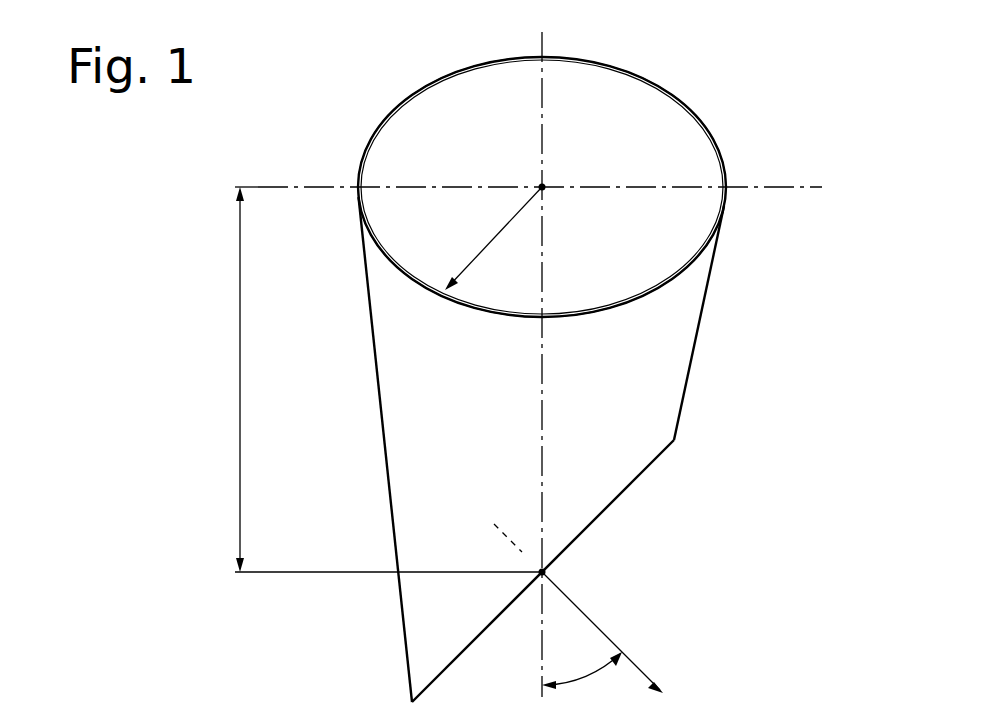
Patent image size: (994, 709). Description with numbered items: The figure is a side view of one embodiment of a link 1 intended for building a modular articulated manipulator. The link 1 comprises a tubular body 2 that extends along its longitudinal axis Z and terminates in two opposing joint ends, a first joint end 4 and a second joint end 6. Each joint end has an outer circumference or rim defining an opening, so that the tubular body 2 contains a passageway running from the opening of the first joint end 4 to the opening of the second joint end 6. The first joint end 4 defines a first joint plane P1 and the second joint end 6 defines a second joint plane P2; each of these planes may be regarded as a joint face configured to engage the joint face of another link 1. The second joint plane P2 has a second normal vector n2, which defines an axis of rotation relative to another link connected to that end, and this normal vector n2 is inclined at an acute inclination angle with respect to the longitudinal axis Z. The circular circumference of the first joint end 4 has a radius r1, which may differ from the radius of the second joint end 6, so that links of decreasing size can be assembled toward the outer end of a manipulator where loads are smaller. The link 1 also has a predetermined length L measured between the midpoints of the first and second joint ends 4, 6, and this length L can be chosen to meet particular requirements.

The link 1 is at (779, 288).
The tubular body 2 is at (698, 338).
The first joint end 4 is at (724, 153).
The second joint end 6 is at (652, 465).
The longitudinal axis Z is at (543, 43).
The first joint plane P1 is at (668, 142).
The second joint plane P2 is at (584, 533).
The radius of the first joint end r1 is at (493, 238).
The second normal vector n2 is at (622, 634).
The length L is at (388, 379).